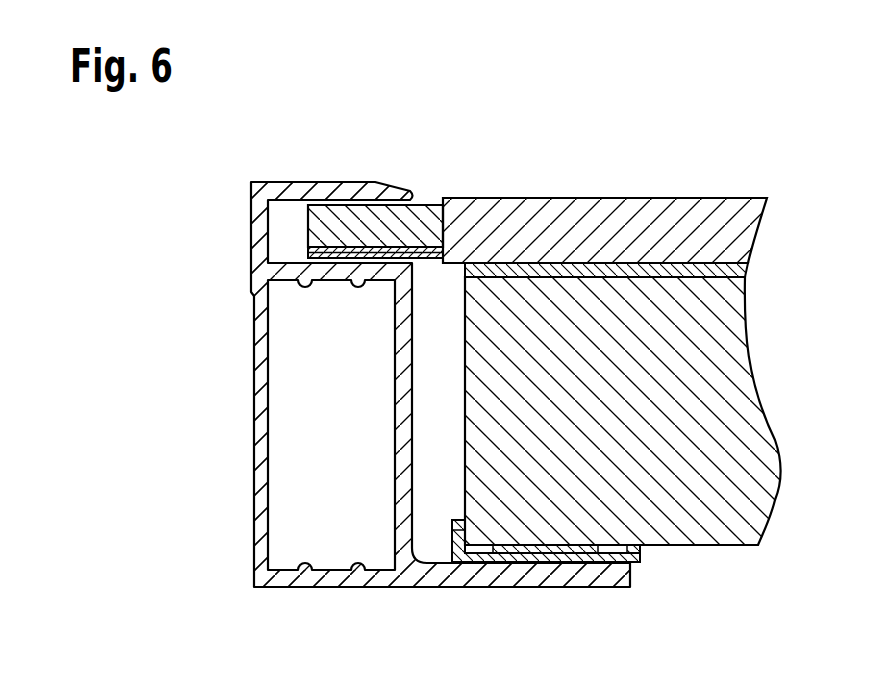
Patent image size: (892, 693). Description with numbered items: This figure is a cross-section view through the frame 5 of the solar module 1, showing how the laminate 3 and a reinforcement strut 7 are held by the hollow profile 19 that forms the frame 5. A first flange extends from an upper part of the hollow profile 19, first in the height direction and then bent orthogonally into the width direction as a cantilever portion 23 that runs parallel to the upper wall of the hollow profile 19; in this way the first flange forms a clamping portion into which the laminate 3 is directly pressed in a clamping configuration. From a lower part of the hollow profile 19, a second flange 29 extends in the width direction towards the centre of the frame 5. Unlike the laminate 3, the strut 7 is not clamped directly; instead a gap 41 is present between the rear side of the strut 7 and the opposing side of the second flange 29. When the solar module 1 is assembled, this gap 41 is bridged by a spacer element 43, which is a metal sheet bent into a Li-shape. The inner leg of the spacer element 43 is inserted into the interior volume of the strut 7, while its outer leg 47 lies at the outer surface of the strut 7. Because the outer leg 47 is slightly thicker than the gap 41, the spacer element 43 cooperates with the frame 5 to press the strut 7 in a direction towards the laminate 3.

The solar module 1 is at (126, 176).
The laminate 3 is at (562, 216).
The frame 5 is at (192, 309).
The reinforcement strut 7 is at (740, 343).
The hollow profile 19 is at (229, 464).
The cantilever portion 23 is at (311, 192).
The second flange 29 is at (447, 580).
The gap 41 is at (660, 562).
The spacer element 43 is at (612, 560).
The outer leg 47 is at (513, 555).